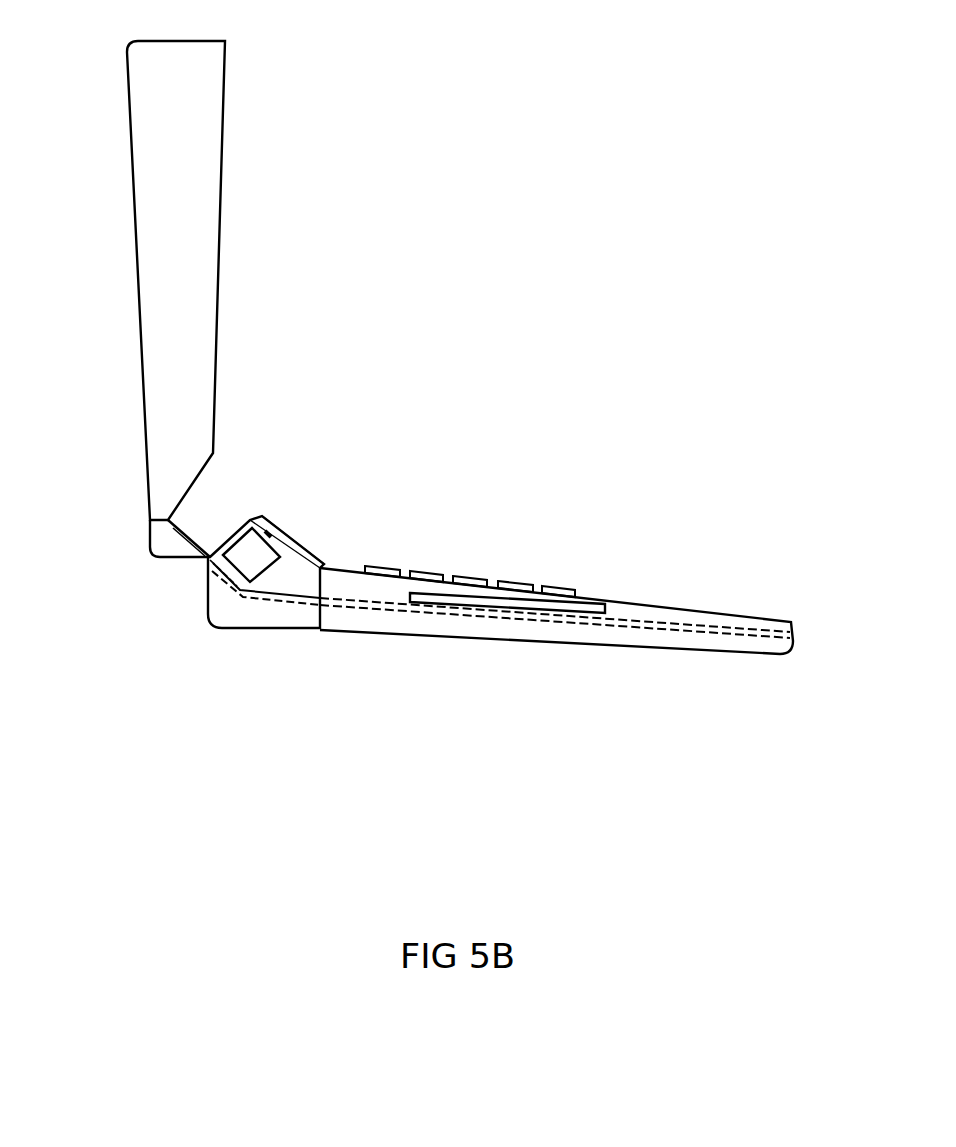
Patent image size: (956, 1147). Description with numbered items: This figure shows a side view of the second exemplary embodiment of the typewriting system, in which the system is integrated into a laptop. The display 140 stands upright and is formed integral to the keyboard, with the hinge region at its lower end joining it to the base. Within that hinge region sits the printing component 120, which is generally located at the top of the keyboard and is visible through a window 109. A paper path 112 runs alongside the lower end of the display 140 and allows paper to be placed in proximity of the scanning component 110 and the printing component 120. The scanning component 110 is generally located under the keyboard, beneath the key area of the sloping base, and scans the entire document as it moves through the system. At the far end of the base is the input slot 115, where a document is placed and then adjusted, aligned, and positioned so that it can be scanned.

The display 140 is at (252, 65).
The paper path 112 is at (178, 540).
The window 109 is at (305, 550).
The printing component 120 is at (274, 522).
The input slot 115 is at (802, 633).
The scanning component 110 is at (590, 600).